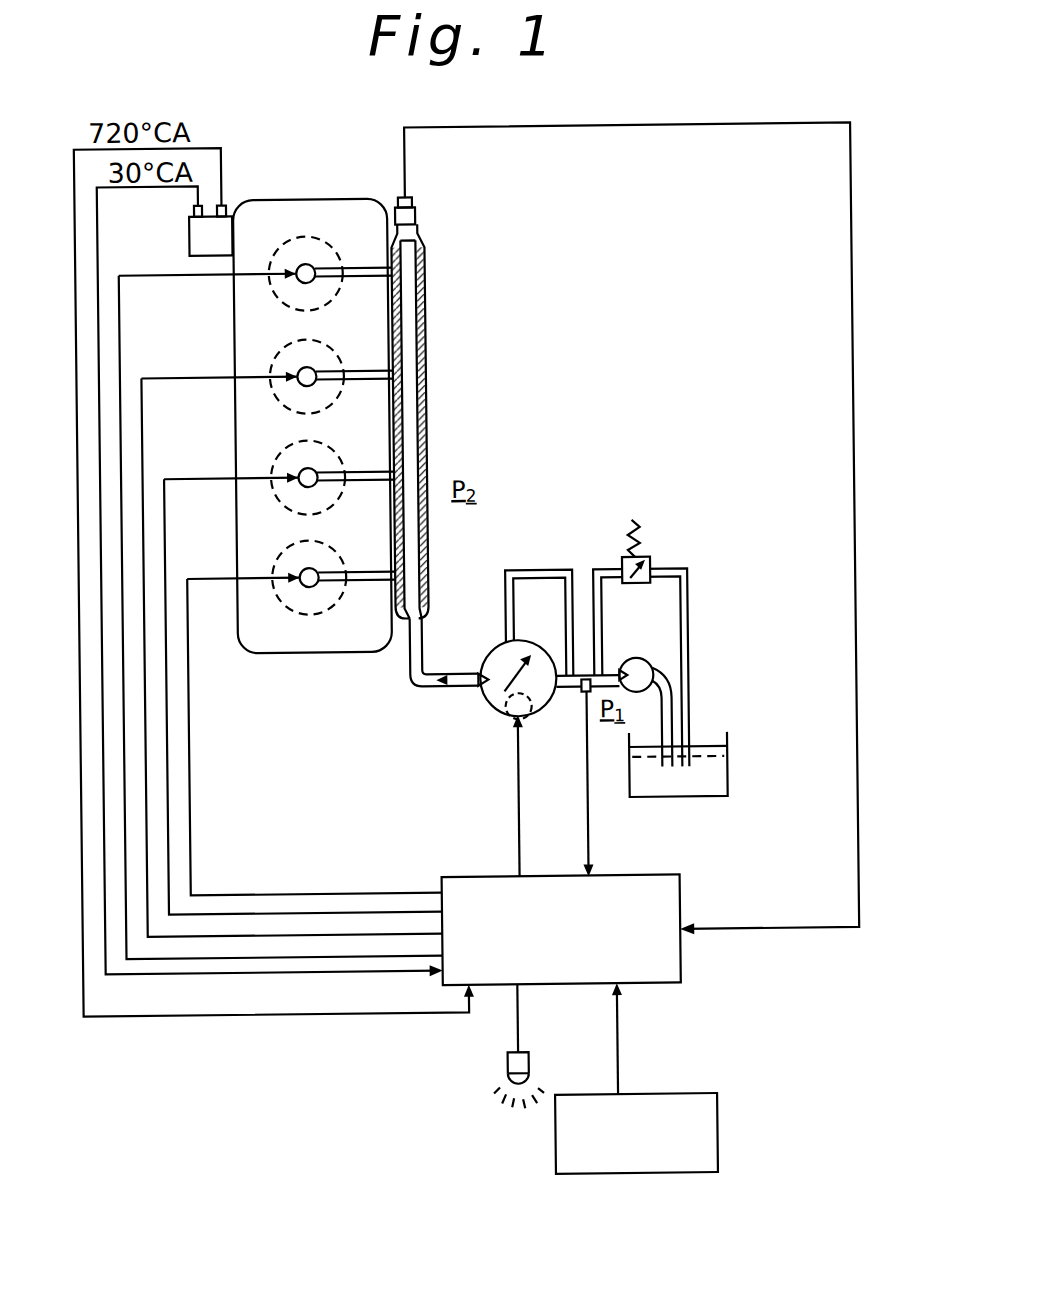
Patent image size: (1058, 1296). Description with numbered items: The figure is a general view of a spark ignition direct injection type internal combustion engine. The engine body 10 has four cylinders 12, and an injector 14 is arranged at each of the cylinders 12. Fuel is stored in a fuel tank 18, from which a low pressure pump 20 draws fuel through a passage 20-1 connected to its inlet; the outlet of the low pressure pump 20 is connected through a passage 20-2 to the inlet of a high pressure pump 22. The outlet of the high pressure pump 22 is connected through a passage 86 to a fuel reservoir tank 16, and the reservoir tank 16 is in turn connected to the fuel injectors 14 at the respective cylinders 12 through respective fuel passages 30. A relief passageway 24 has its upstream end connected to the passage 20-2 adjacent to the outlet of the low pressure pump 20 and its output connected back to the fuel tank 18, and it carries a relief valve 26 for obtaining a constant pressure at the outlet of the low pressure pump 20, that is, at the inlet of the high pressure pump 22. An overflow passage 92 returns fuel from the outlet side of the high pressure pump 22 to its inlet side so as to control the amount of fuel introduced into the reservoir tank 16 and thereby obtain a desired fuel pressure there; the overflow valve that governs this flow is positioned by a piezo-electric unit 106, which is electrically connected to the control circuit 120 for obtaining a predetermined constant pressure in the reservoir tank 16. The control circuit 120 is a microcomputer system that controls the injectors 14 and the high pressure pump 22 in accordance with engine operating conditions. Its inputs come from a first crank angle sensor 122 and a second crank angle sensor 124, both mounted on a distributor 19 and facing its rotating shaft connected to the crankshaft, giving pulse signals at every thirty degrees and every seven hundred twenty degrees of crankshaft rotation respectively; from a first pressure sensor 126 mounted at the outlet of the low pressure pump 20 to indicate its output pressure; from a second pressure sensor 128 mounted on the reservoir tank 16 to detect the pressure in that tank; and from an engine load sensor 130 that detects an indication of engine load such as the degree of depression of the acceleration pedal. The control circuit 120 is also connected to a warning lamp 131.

The engine body 10 is at (262, 674).
The cylinder 12 is at (272, 286).
The injector 14 is at (309, 262).
The fuel reservoir tank 16 is at (420, 412).
The fuel tank 18 is at (724, 767).
The distributor 19 is at (200, 238).
The low pressure pump 20 is at (634, 661).
The passage 20-1 is at (672, 706).
The passage 20-2 is at (522, 740).
The high pressure pump 22 is at (532, 641).
The relief passageway 24 is at (688, 588).
The relief valve 26 is at (645, 565).
The fuel passage 30 is at (364, 266).
The passage 86 is at (410, 683).
The overflow passage 92 is at (550, 571).
The piezo-electric unit 106 is at (502, 723).
The control circuit 120 is at (668, 985).
The first crank angle sensor 122 is at (198, 208).
The second crank angle sensor 124 is at (228, 202).
The first pressure sensor 126 is at (584, 713).
The second pressure sensor 128 is at (416, 208).
The engine load sensor 130 is at (700, 1096).
The warning lamp 131 is at (502, 1068).